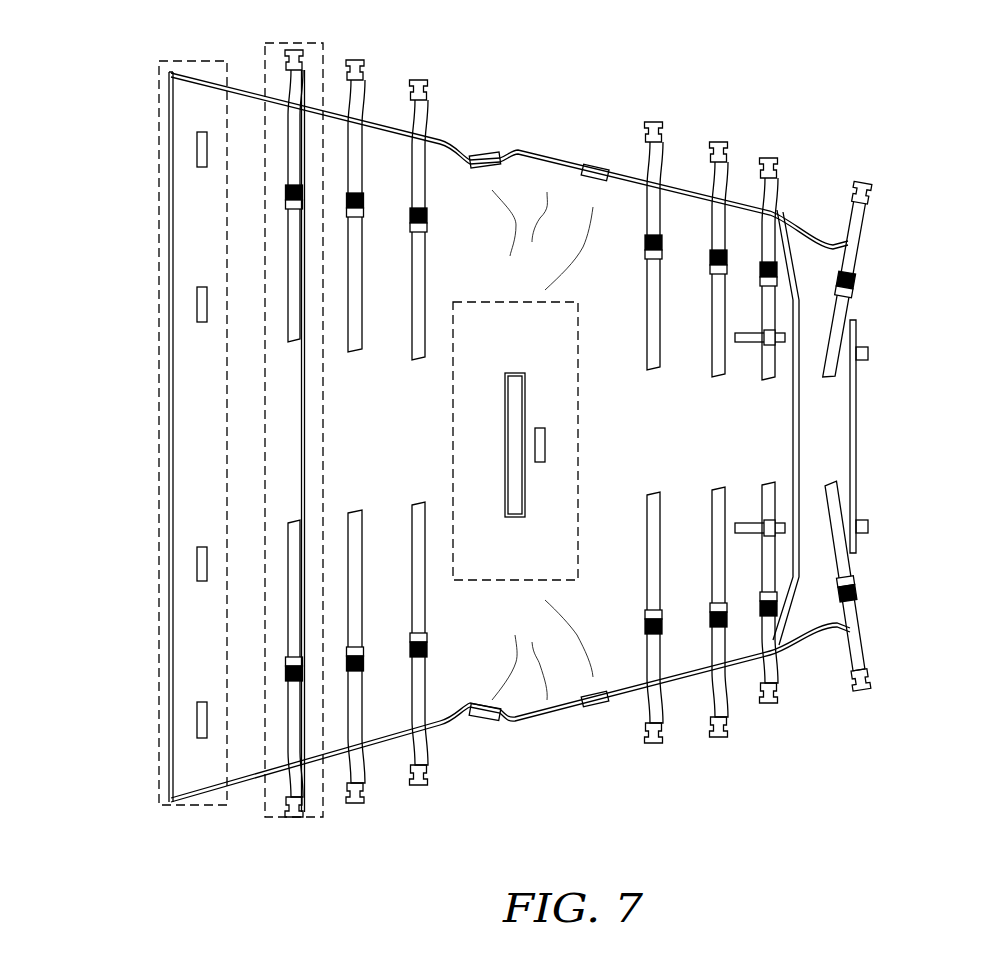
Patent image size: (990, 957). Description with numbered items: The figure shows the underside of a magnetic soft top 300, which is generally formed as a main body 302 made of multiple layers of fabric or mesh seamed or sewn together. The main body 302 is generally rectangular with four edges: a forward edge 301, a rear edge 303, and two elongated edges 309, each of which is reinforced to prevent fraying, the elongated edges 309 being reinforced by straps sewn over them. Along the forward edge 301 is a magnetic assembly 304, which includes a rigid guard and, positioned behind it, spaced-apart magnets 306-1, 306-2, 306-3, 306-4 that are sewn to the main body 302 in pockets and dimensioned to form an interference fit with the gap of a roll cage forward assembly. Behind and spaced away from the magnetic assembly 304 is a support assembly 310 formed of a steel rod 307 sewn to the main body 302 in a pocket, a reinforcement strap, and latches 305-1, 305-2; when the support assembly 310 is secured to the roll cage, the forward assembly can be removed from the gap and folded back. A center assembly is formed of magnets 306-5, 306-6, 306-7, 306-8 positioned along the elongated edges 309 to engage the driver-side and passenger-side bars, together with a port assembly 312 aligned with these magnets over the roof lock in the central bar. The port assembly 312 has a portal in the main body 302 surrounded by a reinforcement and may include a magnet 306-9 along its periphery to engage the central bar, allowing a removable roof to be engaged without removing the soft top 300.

The magnetic soft top 300 is at (830, 70).
The forward edge 301 is at (158, 83).
The main body 302 is at (671, 472).
The rear edge 303 is at (870, 398).
The magnetic assembly 304 is at (158, 366).
The latch 305-1 is at (299, 820).
The latch 305-2 is at (298, 45).
The magnet 306-1 is at (195, 712).
The magnet 306-2 is at (195, 553).
The magnet 306-3 is at (195, 300).
The magnet 306-4 is at (195, 149).
The magnet 306-5 is at (490, 150).
The magnet 306-6 is at (598, 163).
The magnet 306-7 is at (488, 722).
The magnet 306-8 is at (599, 708).
The magnet 306-9 is at (548, 440).
The steel rod 307 is at (304, 452).
The elongated edge 309 is at (868, 242).
The support assembly 310 is at (324, 410).
The port assembly 312 is at (493, 299).